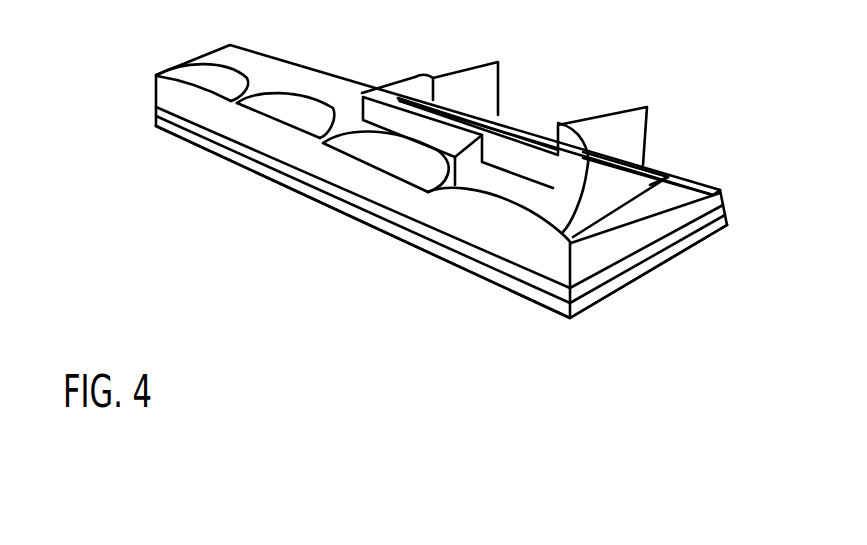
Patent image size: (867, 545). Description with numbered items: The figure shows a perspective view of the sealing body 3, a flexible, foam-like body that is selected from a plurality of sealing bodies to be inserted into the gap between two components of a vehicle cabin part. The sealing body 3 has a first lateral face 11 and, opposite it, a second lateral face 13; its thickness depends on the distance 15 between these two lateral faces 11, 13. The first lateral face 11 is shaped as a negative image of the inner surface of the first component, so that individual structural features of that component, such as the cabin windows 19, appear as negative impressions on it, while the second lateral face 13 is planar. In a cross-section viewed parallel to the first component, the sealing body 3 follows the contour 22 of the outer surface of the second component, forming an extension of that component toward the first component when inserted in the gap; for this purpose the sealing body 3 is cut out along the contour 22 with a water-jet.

The sealing body 3 is at (687, 168).
The first lateral face 11 is at (283, 90).
The second lateral face 13 is at (425, 252).
The distance 15 is at (155, 75).
The cabin windows 19 is at (400, 147).
The contour 22 is at (467, 95).